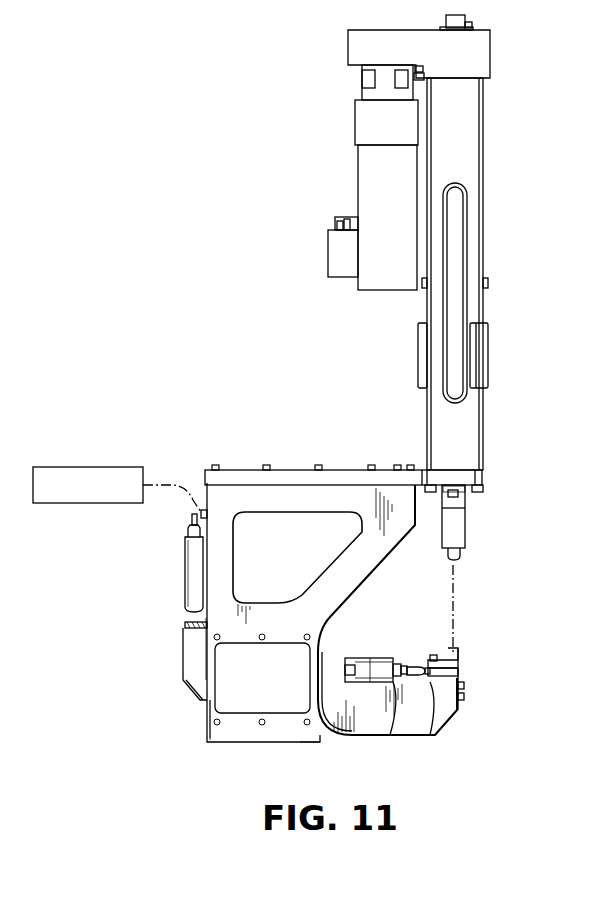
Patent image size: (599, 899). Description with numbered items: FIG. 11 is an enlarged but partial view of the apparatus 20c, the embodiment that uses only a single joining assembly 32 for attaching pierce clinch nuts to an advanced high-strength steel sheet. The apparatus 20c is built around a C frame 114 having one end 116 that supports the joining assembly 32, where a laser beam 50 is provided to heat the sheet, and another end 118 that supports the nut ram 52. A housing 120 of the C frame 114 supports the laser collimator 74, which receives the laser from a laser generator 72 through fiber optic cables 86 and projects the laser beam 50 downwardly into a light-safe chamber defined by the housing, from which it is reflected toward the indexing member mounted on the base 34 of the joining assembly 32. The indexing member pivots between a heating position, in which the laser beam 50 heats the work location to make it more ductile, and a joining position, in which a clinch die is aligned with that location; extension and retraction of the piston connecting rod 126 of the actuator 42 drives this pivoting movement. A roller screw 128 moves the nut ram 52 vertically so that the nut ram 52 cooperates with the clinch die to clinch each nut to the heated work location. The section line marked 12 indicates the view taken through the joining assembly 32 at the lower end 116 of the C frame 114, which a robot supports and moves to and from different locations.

The roller screw 128 is at (483, 158).
The another end of the C frame 118 is at (402, 500).
The housing 120 is at (215, 601).
The laser collimator 74 is at (185, 562).
The C frame 114 is at (203, 612).
The laser generator 72 is at (88, 485).
The fiber optic cables 86 is at (157, 483).
The apparatus 20c is at (487, 492).
The nut ram 52 is at (472, 535).
The laser beam 50 is at (448, 643).
The section line for FIG. 12 is at (377, 610).
The actuator 42 is at (383, 683).
The joining assembly 32 is at (466, 656).
The base 34 is at (460, 670).
The piston connecting rod 126 is at (442, 697).
The one end of the C frame 116 is at (467, 713).